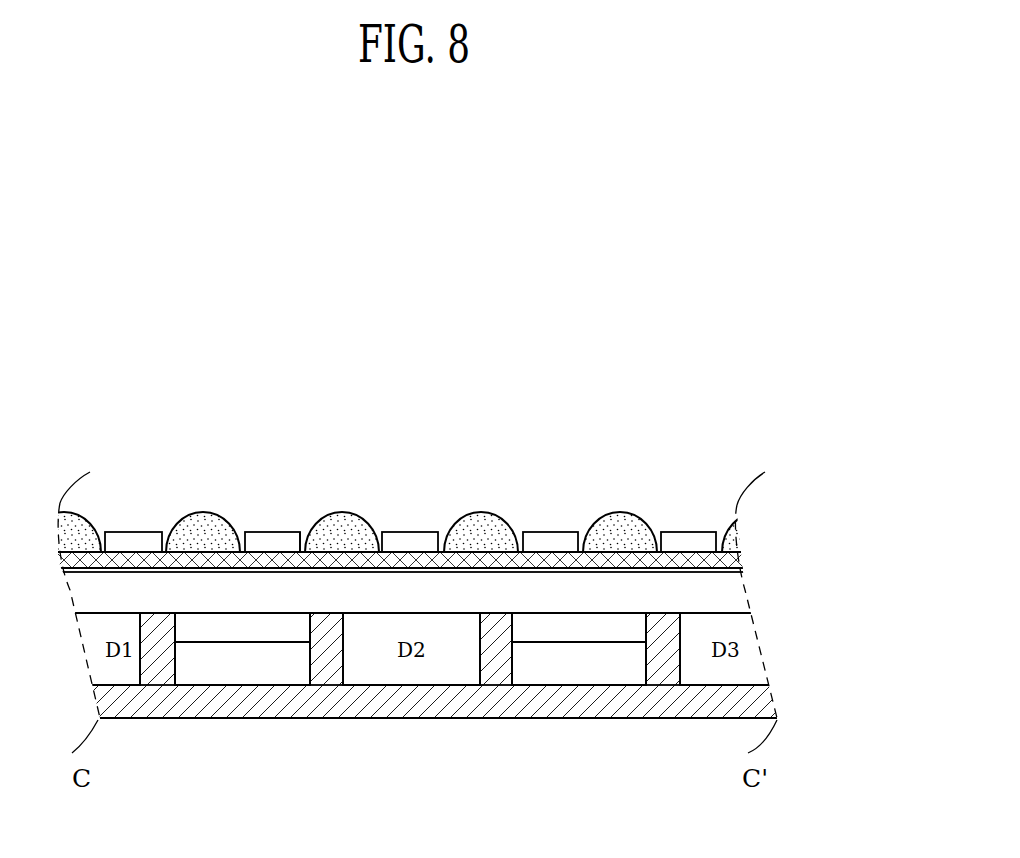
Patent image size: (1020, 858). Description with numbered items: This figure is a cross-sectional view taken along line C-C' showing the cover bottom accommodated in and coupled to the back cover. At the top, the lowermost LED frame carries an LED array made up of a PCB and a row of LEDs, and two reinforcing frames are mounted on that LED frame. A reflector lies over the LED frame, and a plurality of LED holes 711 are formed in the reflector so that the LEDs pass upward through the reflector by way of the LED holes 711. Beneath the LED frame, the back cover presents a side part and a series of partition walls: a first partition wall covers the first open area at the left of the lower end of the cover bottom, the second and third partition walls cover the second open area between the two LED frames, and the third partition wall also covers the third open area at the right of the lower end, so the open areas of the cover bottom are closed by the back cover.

The LED hole 711 is at (303, 537).